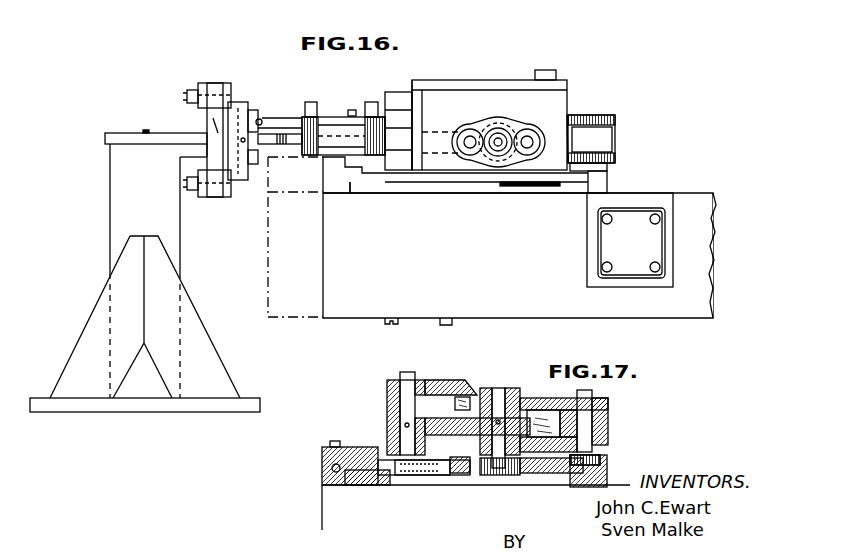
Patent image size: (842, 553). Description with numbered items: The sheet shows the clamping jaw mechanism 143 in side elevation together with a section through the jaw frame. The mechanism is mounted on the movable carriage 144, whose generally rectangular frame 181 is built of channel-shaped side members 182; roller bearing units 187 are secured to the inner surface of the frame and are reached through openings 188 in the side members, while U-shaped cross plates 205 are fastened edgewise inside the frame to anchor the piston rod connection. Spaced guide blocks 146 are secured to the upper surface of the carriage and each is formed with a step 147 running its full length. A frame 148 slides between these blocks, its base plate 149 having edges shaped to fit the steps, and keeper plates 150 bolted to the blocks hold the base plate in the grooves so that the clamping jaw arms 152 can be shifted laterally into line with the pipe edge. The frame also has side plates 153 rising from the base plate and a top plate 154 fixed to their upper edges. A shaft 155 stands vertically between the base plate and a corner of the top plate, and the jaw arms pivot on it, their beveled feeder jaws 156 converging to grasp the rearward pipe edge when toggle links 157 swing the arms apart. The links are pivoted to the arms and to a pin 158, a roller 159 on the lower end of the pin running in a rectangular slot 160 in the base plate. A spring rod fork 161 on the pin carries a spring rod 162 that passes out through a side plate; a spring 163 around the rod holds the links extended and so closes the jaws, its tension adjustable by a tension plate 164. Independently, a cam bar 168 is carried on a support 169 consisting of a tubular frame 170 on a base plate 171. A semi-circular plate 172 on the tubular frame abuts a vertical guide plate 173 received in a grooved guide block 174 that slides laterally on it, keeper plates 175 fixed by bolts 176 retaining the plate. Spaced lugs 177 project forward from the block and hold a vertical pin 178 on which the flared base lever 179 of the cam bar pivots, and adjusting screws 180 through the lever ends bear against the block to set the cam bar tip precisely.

In FIG. 16, the clamping jaw mechanism 143 is at (588, 108).
In FIG. 16, the carriage 144 is at (694, 192).
In FIG. 16, the guide blocks 146 is at (336, 178).
In FIG. 17, the guide blocks 146 is at (324, 466).
In FIG. 16, the step 147 is at (358, 180).
In FIG. 17, the step 147 is at (350, 480).
In FIG. 16, the frame 148 is at (441, 175).
In FIG. 17, the frame 148 is at (391, 484).
In FIG. 16, the base plate 149 is at (471, 180).
In FIG. 17, the base plate 149 is at (460, 474).
In FIG. 16, the keeper plates 150 is at (352, 160).
In FIG. 17, the keeper plates 150 is at (357, 447).
In FIG. 16, the clamping jaw arms 152 is at (390, 110).
In FIG. 17, the clamping jaw arms 152 is at (390, 440).
In FIG. 16, the side plates 153 is at (414, 89).
In FIG. 16, the top plate 154 is at (470, 80).
In FIG. 16, the shaft 155 is at (552, 70).
In FIG. 16, the feeder jaws 156 is at (614, 140).
In FIG. 17, the toggle links 157 is at (472, 433).
In FIG. 17, the pin 158 is at (498, 388).
In FIG. 17, the roller 159 is at (496, 476).
In FIG. 17, the slot 160 is at (540, 476).
In FIG. 17, the spring rod fork 161 is at (482, 392).
In FIG. 16, the spring rod 162 is at (500, 128).
In FIG. 16, the spring 163 is at (512, 128).
In FIG. 16, the tension plate 164 is at (515, 158).
In FIG. 16, the cam bar 168 is at (334, 105).
In FIG. 16, the support 169 is at (100, 183).
In FIG. 16, the tubular frame 170 is at (108, 236).
In FIG. 16, the base plate 171 is at (65, 398).
In FIG. 16, the semi-circular plate 172 is at (112, 130).
In FIG. 16, the guide plate 173 is at (205, 119).
In FIG. 16, the guide block 174 is at (222, 83).
In FIG. 16, the keeper plates 175 is at (201, 83).
In FIG. 16, the bolts 176 is at (188, 92).
In FIG. 16, the lugs 177 is at (256, 110).
In FIG. 16, the pin 178 is at (243, 102).
In FIG. 16, the base lever 179 is at (231, 127).
In FIG. 16, the adjusting screws 180 is at (262, 120).
In FIG. 16, the frame 181 is at (350, 312).
In FIG. 16, the side members 182 is at (712, 228).
In FIG. 16, the roller bearing units 187 is at (604, 242).
In FIG. 16, the openings 188 is at (599, 262).
In FIG. 16, the cross plates 205 is at (447, 325).